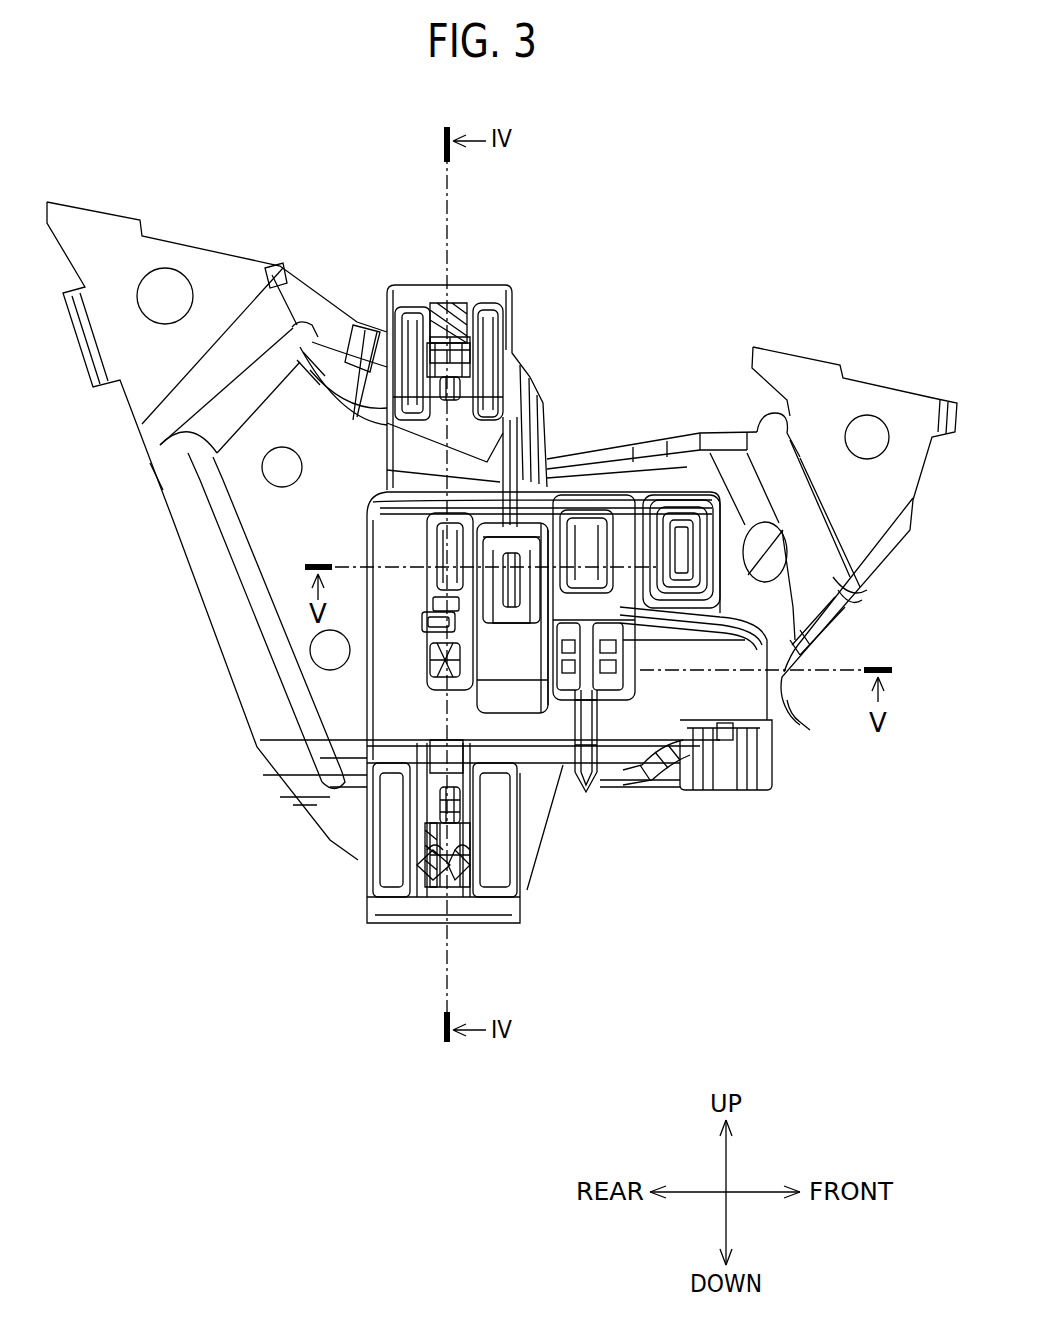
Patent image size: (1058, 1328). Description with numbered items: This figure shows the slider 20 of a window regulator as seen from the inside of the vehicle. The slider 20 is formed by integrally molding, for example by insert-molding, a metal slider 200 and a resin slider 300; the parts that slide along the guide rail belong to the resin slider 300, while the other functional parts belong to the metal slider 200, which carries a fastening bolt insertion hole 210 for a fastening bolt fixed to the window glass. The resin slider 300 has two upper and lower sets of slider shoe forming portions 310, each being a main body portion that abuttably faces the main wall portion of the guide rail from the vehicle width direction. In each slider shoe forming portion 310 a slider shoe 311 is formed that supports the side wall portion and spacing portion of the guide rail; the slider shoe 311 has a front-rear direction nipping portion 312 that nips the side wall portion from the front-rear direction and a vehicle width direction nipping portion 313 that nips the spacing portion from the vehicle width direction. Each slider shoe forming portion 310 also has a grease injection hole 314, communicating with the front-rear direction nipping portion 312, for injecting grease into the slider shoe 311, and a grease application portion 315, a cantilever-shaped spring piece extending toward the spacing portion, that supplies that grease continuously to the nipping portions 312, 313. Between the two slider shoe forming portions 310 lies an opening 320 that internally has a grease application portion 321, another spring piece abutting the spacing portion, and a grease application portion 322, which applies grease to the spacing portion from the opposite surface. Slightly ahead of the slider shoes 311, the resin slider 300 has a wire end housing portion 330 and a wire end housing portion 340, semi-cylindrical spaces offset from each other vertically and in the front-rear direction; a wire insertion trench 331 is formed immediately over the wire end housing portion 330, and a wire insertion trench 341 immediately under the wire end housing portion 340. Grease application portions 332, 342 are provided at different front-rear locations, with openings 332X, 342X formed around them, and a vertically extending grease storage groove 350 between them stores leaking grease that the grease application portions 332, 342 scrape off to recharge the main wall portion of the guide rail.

The slider 20 is at (853, 747).
The metal slider 200 is at (788, 722).
The fastening bolt insertion hole 210 is at (175, 283).
The resin slider 300 is at (773, 773).
The slider shoe forming portion 310 is at (520, 345).
The slider shoe 311 is at (413, 605).
The front-rear direction nipping portion 312 is at (455, 352).
The vehicle width direction nipping portion 313 is at (448, 352).
The grease injection hole 314 is at (477, 362).
The grease application portion 315 is at (455, 393).
The opening 320 is at (440, 637).
The grease application portion 321 is at (440, 600).
The grease application portion 322 is at (440, 673).
The wire end housing portion 330 is at (490, 697).
The wire insertion trench 331 is at (517, 440).
The grease application portion 332 is at (515, 616).
The opening 332X is at (462, 585).
The wire end housing portion 340 is at (612, 617).
The wire insertion trench 341 is at (590, 720).
The grease application portion 342 is at (585, 553).
The opening 342X is at (640, 555).
The grease storage groove 350 is at (547, 607).